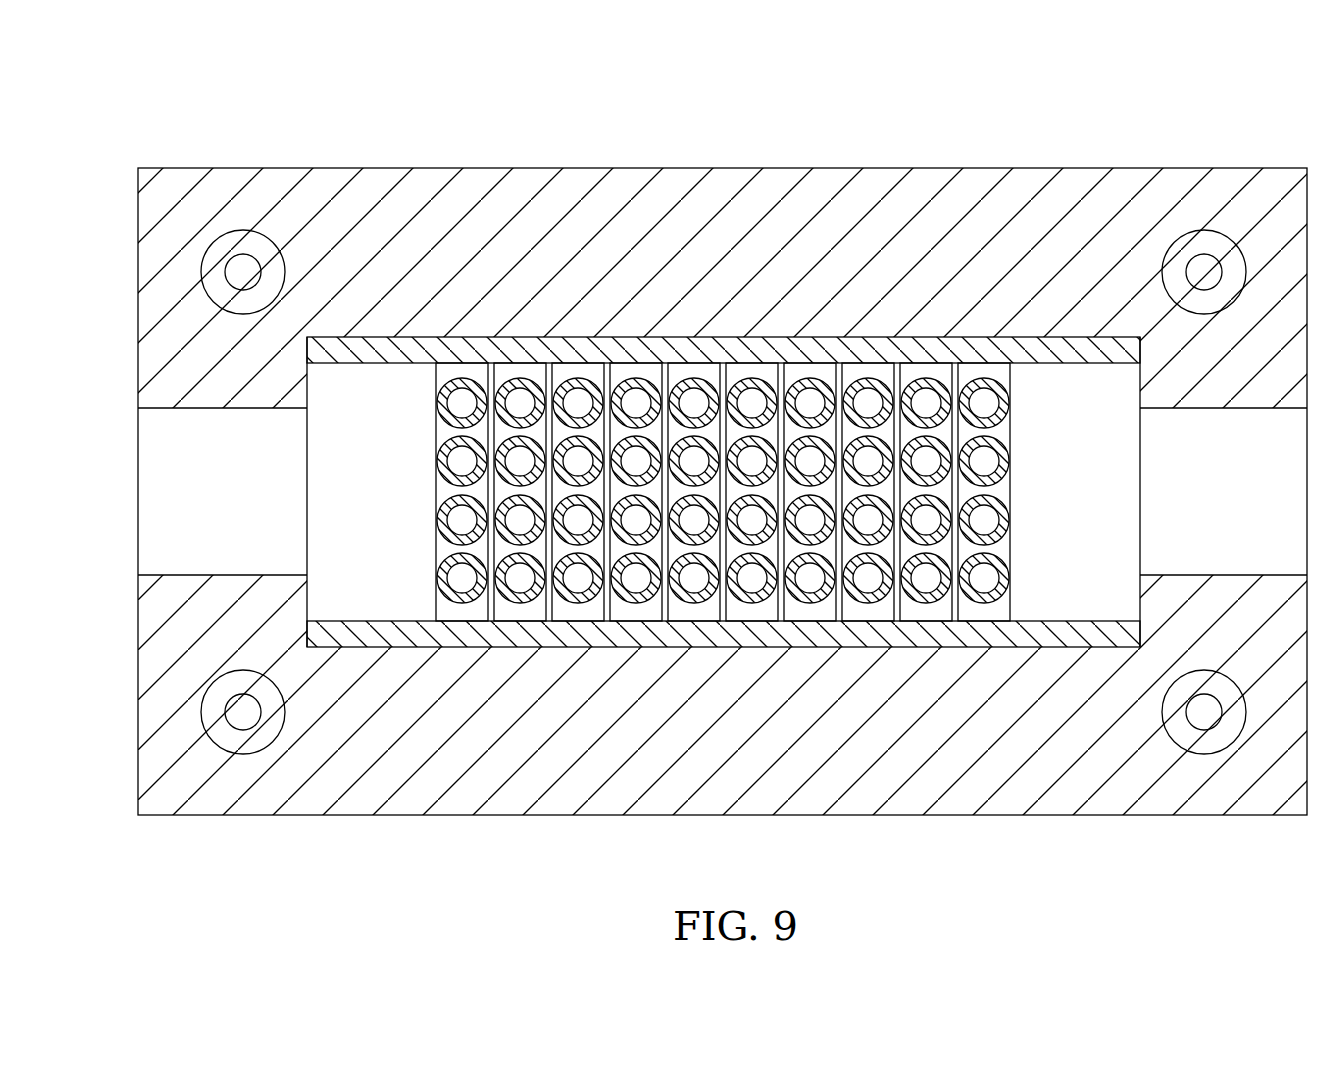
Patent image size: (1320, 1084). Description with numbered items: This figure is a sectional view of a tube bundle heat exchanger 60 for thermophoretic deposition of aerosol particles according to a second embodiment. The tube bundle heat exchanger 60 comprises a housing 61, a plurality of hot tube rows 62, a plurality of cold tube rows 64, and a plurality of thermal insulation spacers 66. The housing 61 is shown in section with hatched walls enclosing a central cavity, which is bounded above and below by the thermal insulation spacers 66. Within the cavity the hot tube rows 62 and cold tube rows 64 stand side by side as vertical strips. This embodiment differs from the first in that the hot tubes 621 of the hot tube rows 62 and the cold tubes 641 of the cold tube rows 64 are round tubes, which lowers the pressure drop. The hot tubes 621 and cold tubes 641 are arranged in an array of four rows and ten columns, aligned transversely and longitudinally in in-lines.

The tube bundle heat exchanger 60 is at (136, 146).
The housing 61 is at (798, 197).
The hot tube rows 62 is at (452, 616).
The hot tubes 621 is at (443, 382).
The cold tube rows 64 is at (868, 616).
The cold tubes 641 is at (517, 382).
The thermal insulation spacers 66 is at (1002, 343).